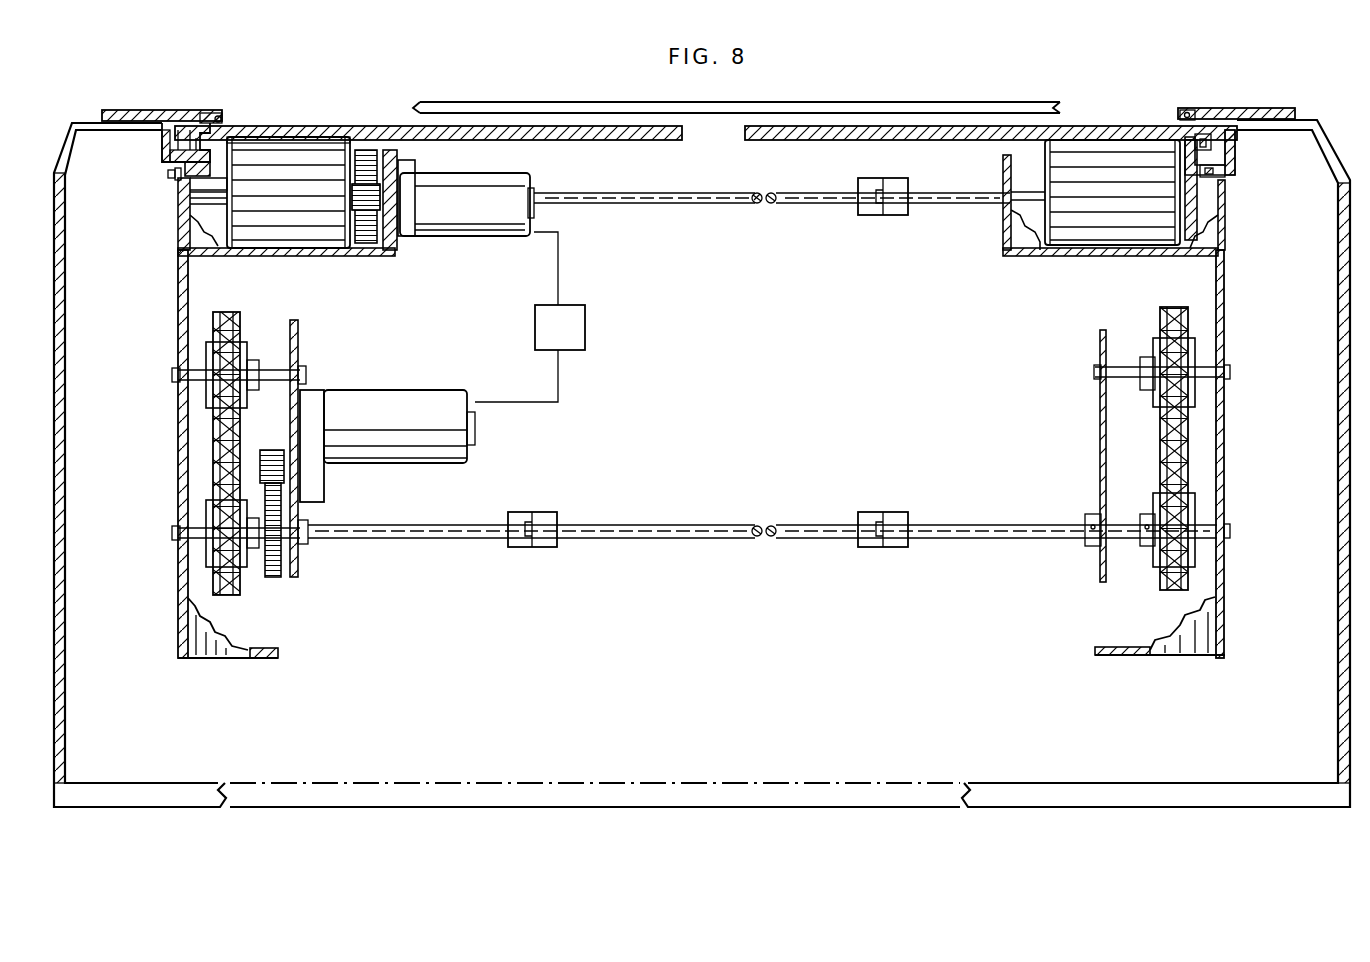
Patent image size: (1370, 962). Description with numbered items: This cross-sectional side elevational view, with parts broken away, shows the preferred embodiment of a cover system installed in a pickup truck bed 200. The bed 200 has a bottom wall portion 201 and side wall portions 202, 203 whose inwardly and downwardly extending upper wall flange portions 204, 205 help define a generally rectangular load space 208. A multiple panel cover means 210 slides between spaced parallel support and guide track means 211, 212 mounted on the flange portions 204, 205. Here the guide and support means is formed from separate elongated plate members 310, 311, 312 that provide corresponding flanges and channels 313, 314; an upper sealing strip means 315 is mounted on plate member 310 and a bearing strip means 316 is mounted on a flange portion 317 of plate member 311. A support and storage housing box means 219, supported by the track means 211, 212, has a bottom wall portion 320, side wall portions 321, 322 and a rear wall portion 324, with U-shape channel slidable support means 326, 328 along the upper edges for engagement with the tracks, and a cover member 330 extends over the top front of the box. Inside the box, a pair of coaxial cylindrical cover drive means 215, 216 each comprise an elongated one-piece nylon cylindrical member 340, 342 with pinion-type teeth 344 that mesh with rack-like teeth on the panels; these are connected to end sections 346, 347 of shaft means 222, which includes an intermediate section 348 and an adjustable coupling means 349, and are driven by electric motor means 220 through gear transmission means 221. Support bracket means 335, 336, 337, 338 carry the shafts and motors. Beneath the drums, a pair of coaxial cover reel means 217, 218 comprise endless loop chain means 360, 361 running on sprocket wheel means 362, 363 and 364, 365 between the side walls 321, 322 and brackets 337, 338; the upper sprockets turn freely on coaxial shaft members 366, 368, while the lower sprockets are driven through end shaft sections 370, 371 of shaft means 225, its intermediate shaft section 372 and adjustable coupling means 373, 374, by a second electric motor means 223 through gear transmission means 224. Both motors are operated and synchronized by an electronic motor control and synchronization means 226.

The pickup truck bed 200 is at (765, 810).
The bottom wall portion 201 is at (1070, 790).
The side wall portion 202 is at (65, 740).
The side wall portion 203 is at (1338, 730).
The upper wall flange portion 204 is at (112, 118).
The upper wall flange portion 205 is at (1320, 118).
The load space 208 is at (712, 710).
The multiple panel cover means 210 is at (413, 104).
The support and guide track means 211 is at (164, 188).
The support and guide track means 212 is at (1252, 178).
The cylindrical cover drive means 215 is at (330, 262).
The cylindrical cover drive means 216 is at (1085, 258).
The cover reel means 217 is at (230, 598).
The cover reel means 218 is at (1128, 588).
The support and storage housing box means 219 is at (1221, 662).
The electric motor means 220 is at (452, 242).
The gear transmission means 221 is at (370, 146).
The shaft means 222 is at (740, 215).
The electric motor means 223 is at (420, 470).
The gear transmission means 224 is at (272, 587).
The shaft means 225 is at (688, 556).
The electronic motor control and synchronization means 226 is at (592, 332).
The plate member 310 is at (1222, 108).
The plate member 311 is at (1205, 156).
The plate member 312 is at (1237, 180).
The channel 313 is at (187, 133).
The channel 314 is at (170, 163).
The upper sealing strip means 315 is at (1183, 118).
The bearing strip means 316 is at (212, 113).
The flange portion 317 is at (1222, 172).
The bottom wall portion 320 is at (258, 658).
The side wall portion 321 is at (178, 462).
The side wall portion 322 is at (1224, 425).
The rear wall portion 324 is at (185, 645).
The slidable support means 326 is at (230, 150).
The slidable support means 328 is at (1183, 170).
The cover member 330 is at (580, 102).
The support bracket means 335 is at (380, 252).
The support bracket means 336 is at (1003, 250).
The support bracket means 337 is at (300, 345).
The support bracket means 338 is at (1100, 348).
The elongated cylindrical member 340 is at (225, 238).
The elongated cylindrical member 342 is at (1043, 165).
The pinion-type teeth 344 is at (282, 162).
The end section 346 is at (170, 186).
The end section 347 is at (998, 190).
The intermediate section 348 is at (672, 185).
The adjustable coupling means 349 is at (873, 215).
The endless loop chain means 360 is at (248, 318).
The endless loop chain means 361 is at (1160, 312).
The sprocket wheel means 362 is at (207, 346).
The sprocket wheel means 363 is at (213, 568).
The sprocket wheel means 364 is at (1196, 340).
The sprocket wheel means 365 is at (1197, 500).
The coaxial shaft member 366 is at (197, 384).
The coaxial shaft member 368 is at (1128, 383).
The end shaft section 370 is at (197, 527).
The end shaft section 371 is at (1208, 540).
The intermediate shaft section 372 is at (712, 517).
The adjustable coupling means 373 is at (540, 548).
The adjustable coupling means 374 is at (880, 548).